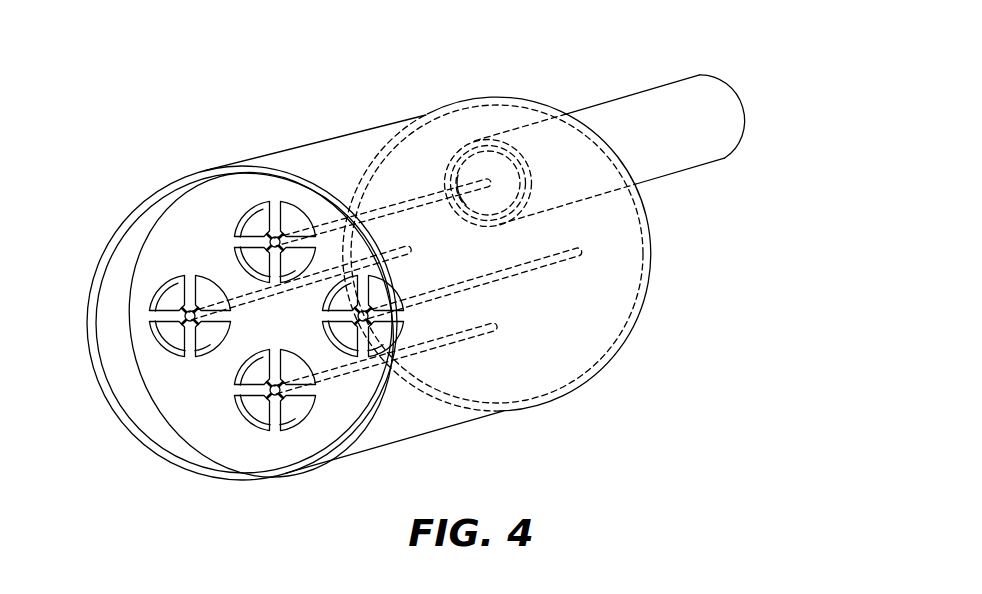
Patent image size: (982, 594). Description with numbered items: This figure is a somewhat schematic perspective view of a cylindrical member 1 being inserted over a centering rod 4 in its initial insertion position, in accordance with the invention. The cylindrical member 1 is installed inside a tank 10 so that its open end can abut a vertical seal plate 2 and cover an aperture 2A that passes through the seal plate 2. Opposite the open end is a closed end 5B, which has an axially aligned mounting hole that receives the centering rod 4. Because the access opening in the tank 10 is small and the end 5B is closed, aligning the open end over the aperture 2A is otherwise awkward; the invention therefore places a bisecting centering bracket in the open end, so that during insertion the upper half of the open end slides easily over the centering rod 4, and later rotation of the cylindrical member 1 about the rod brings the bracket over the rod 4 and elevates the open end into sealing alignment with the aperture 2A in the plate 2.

The cylindrical member 1 is at (629, 92).
The vertical seal plate 2 is at (166, 248).
The aperture 2A is at (258, 222).
The centering rod 4 is at (398, 197).
The closed end 5B is at (752, 94).
The tank 10 is at (473, 99).